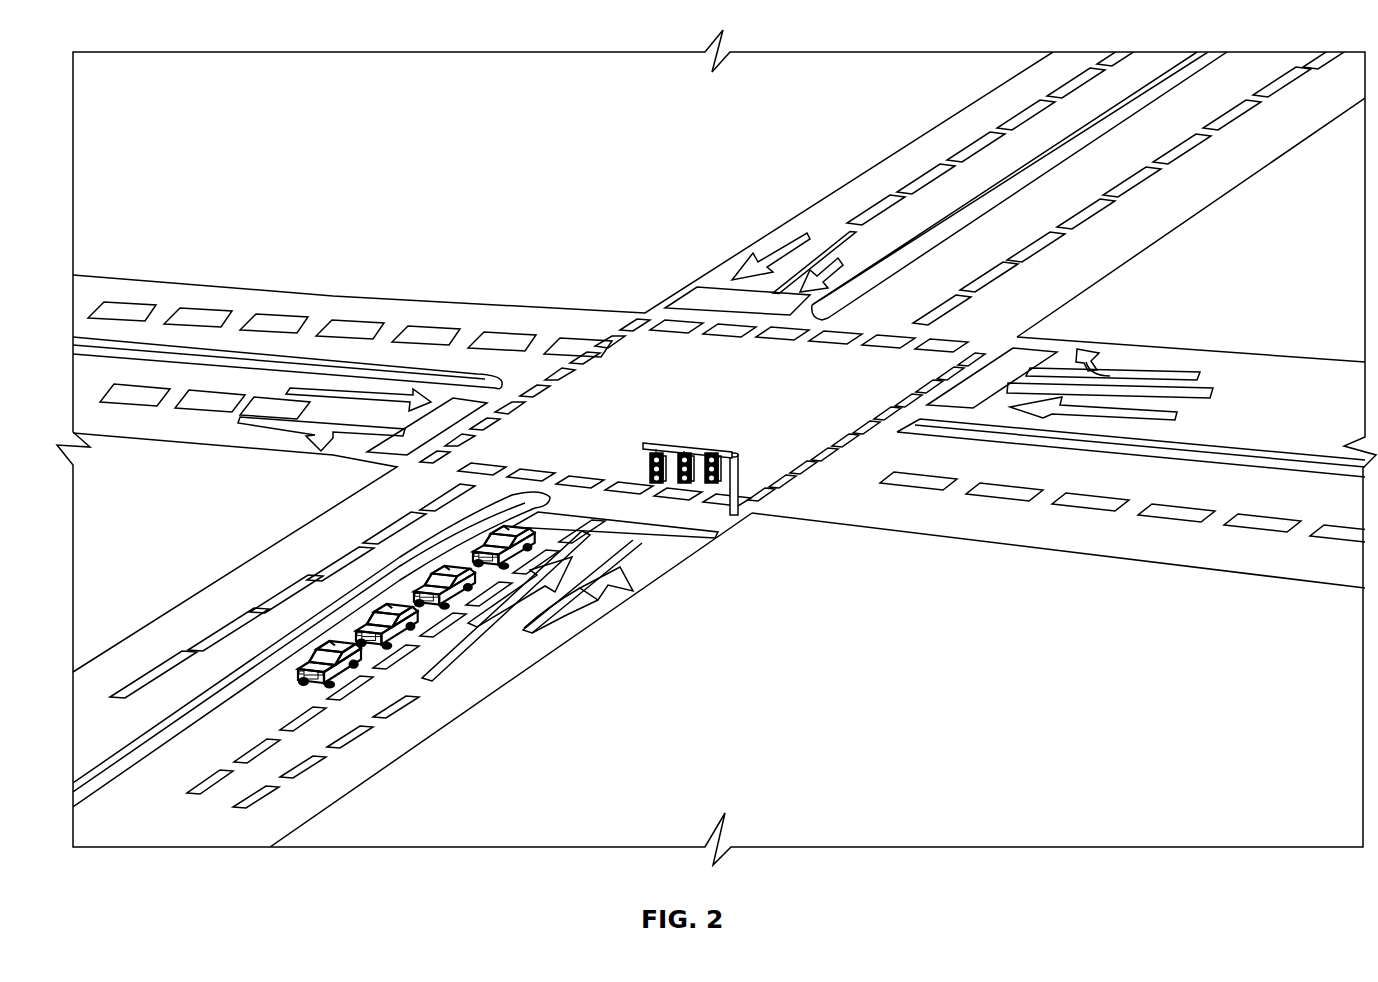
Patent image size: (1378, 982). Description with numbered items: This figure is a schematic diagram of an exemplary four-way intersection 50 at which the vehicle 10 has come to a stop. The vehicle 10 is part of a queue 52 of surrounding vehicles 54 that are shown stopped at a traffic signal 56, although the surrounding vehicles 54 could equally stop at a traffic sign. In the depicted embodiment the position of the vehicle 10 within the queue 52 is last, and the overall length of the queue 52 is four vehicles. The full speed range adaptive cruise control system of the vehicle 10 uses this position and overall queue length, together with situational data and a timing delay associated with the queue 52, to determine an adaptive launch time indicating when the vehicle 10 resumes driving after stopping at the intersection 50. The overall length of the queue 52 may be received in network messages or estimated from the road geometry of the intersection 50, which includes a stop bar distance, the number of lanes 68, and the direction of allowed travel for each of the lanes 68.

The vehicle 10 is at (326, 645).
The intersection 50 is at (750, 529).
The queue 52 is at (410, 665).
The surrounding vehicles 54 is at (393, 620).
The traffic signal 56 is at (734, 440).
The lanes 68 is at (1192, 90).